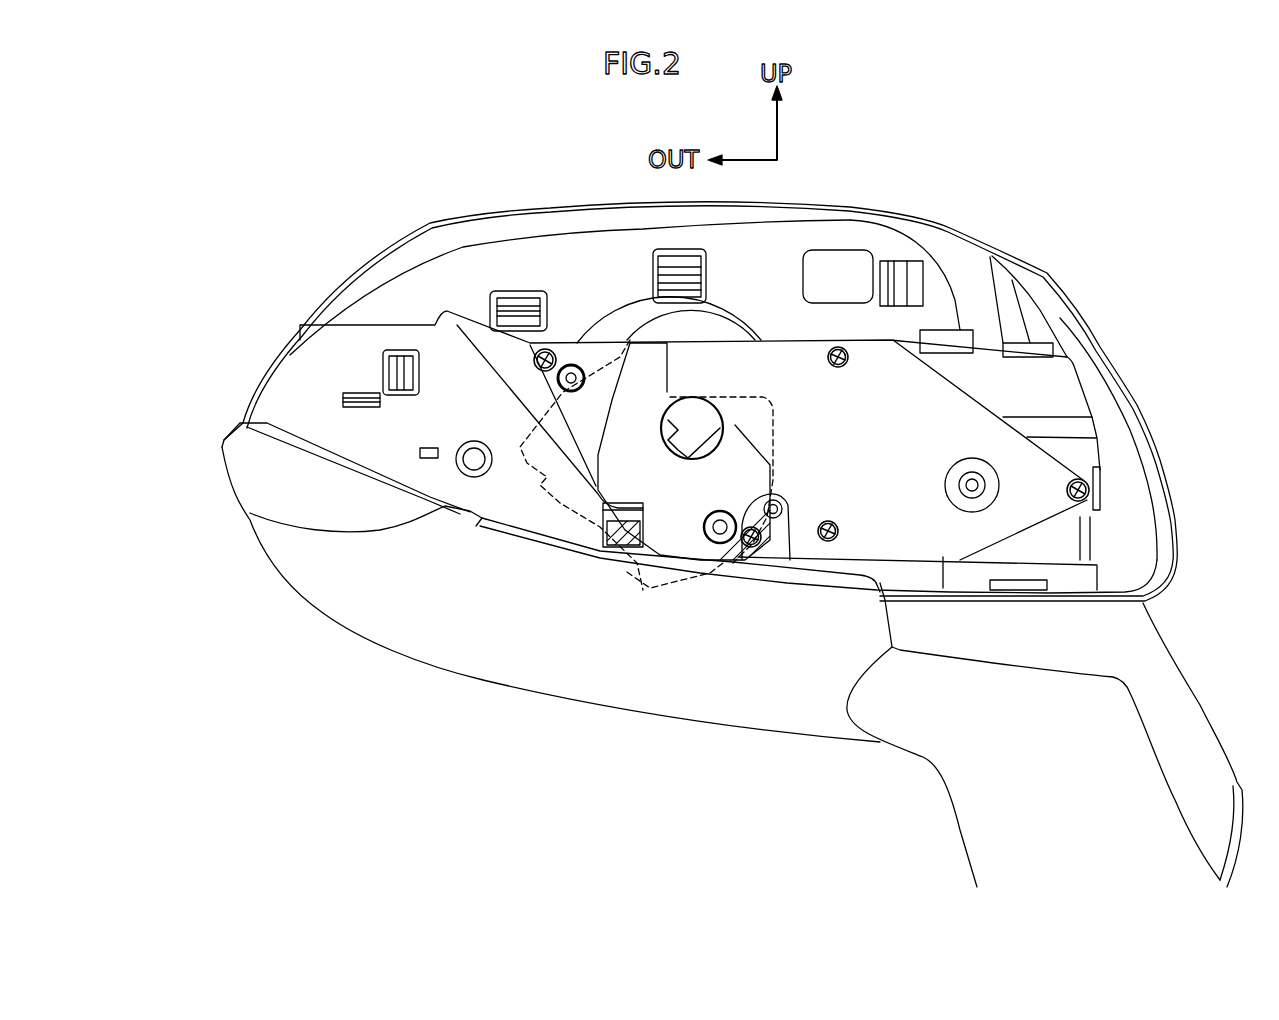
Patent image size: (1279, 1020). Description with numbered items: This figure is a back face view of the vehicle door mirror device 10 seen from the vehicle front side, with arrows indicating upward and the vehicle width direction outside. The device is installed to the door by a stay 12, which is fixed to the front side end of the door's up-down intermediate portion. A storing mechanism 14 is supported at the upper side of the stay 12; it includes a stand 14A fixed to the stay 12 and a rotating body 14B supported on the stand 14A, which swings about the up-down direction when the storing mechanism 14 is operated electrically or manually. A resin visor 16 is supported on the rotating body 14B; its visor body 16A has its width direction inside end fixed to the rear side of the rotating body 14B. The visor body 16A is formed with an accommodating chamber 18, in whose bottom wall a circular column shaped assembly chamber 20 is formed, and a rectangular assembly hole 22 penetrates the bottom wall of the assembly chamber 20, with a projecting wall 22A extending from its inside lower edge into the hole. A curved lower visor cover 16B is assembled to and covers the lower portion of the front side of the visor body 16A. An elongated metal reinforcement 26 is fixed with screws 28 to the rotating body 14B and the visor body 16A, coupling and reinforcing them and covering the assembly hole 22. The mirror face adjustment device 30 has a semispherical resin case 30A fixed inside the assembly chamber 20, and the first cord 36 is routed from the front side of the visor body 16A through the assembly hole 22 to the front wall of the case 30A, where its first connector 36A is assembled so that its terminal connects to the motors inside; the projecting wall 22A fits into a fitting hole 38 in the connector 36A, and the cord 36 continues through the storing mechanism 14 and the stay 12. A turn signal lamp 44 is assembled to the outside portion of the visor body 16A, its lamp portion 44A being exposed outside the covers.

The vehicle door mirror device 10 is at (363, 176).
The stay 12 is at (1200, 698).
The storing mechanism 14 is at (1078, 380).
The stand 14A is at (1100, 578).
The rotating body 14B is at (1100, 440).
The visor 16 is at (974, 224).
The visor body 16A is at (436, 222).
The lower visor cover 16B is at (578, 690).
The accommodating chamber 18 is at (578, 240).
The assembly chamber 20 is at (626, 335).
The assembly hole 22 is at (548, 440).
The projecting wall 22A is at (715, 545).
The reinforcement 26 is at (782, 338).
The screws 28 is at (533, 357).
The case 30A is at (735, 400).
The mirror face adjustment device 30 is at (688, 414).
The first connector 36A is at (776, 428).
The first cord 36 is at (722, 408).
The fitting hole 38 is at (775, 500).
The lamp portion 44A is at (292, 477).
The turn signal lamp 44 is at (242, 480).